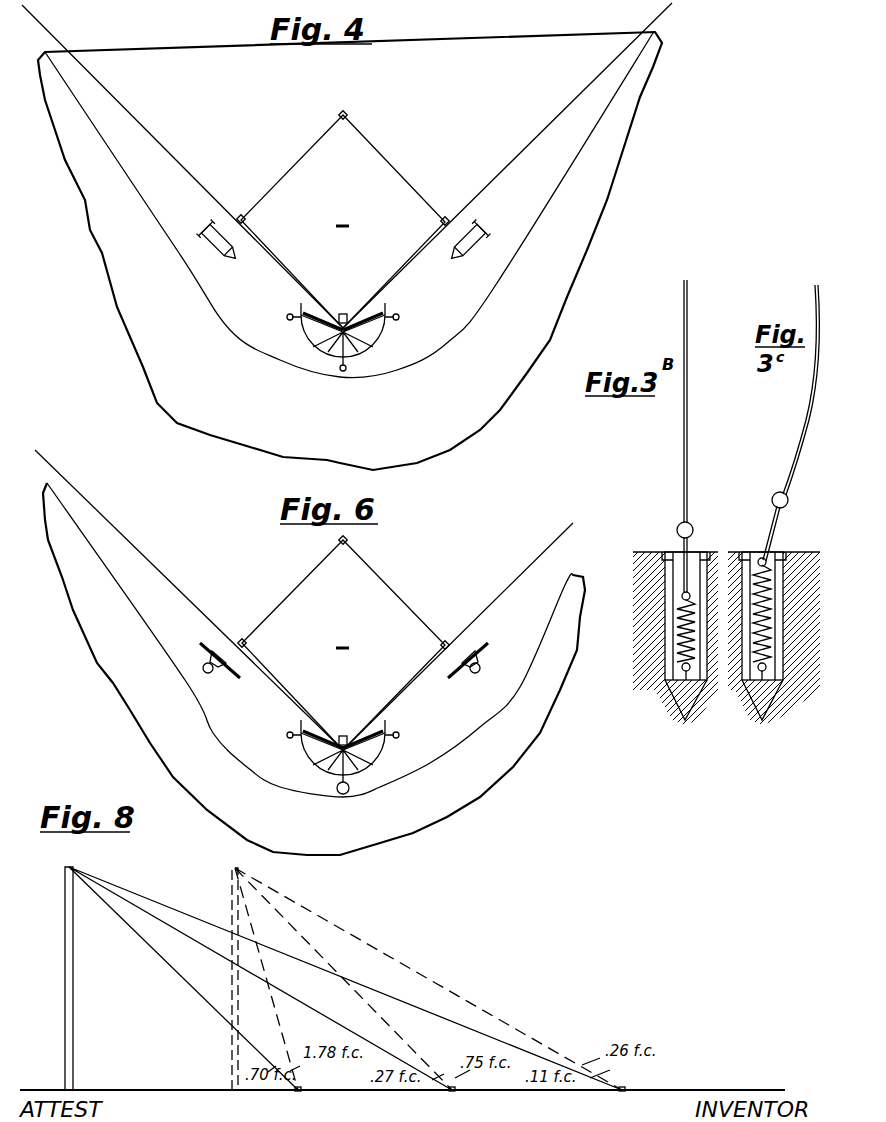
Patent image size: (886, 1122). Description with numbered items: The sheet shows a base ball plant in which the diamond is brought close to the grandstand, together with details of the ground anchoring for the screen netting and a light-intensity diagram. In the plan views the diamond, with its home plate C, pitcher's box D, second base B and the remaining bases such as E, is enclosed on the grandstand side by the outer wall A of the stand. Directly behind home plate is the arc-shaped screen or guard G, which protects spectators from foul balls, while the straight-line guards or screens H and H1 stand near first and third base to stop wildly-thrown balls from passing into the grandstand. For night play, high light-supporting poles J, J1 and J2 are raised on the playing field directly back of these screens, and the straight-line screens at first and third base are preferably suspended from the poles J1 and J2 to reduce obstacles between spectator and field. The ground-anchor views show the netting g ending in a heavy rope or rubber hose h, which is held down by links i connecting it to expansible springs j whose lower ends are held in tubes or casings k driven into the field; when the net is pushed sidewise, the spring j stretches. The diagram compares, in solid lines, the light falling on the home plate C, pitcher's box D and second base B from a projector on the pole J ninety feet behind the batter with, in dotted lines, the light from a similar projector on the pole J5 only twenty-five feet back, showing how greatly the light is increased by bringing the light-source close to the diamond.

In FIG. 4, the reflector side wall A is at (145, 223).
In FIG. 6, the reflector side wall A is at (110, 595).
In FIG. 4, the second base B is at (296, 170).
In FIG. 6, the second base B is at (283, 600).
In FIG. 4, the home plate C is at (343, 313).
In FIG. 6, the home plate C is at (343, 735).
In FIG. 8, the home plate C is at (299, 1094).
In FIG. 4, the pitcher's box D is at (350, 210).
In FIG. 6, the pitcher's box D is at (350, 632).
In FIG. 8, the pitcher's box D is at (453, 1094).
In FIG. 4, the second base E is at (343, 122).
In FIG. 6, the second base E is at (341, 546).
In FIG. 8, the second base E is at (623, 1094).
In FIG. 4, the screen or guard G is at (322, 338).
In FIG. 6, the screen or guard G is at (322, 760).
In FIG. 4, the guard or screen H is at (471, 252).
In FIG. 6, the guard or screen H is at (481, 642).
In FIG. 4, the guard or screen H1 is at (217, 252).
In FIG. 6, the guard or screen H1 is at (208, 642).
In FIG. 6, the light-supporting pole J is at (349, 787).
In FIG. 8, the light-supporting pole J is at (65, 977).
In FIG. 6, the light-supporting pole J1 is at (471, 673).
In FIG. 6, the light-supporting pole J2 is at (211, 674).
In FIG. 8, the light-supporting pole J5 is at (232, 972).
In FIG. 3B, the netting g is at (683, 431).
In FIG. 3C, the netting g is at (804, 420).
In FIG. 3B, the rope or rubber hose h is at (694, 525).
In FIG. 3C, the rope or rubber hose h is at (773, 493).
In FIG. 3B, the link i is at (680, 546).
In FIG. 3C, the link i is at (775, 527).
In FIG. 3B, the expansible spring j is at (677, 609).
In FIG. 3C, the expansible spring j is at (771, 604).
In FIG. 3B, the tube or casing k is at (665, 643).
In FIG. 3C, the tube or casing k is at (783, 645).